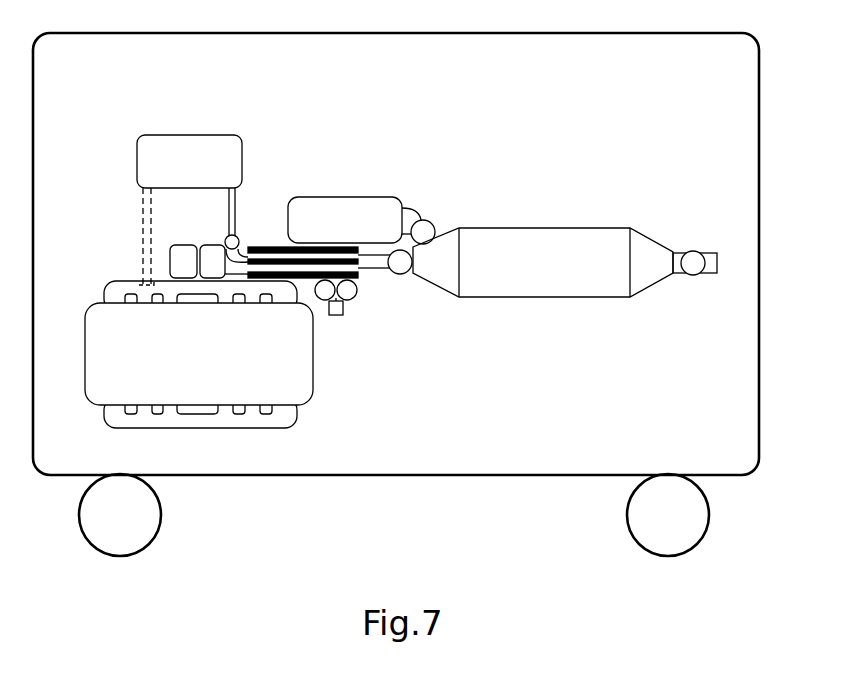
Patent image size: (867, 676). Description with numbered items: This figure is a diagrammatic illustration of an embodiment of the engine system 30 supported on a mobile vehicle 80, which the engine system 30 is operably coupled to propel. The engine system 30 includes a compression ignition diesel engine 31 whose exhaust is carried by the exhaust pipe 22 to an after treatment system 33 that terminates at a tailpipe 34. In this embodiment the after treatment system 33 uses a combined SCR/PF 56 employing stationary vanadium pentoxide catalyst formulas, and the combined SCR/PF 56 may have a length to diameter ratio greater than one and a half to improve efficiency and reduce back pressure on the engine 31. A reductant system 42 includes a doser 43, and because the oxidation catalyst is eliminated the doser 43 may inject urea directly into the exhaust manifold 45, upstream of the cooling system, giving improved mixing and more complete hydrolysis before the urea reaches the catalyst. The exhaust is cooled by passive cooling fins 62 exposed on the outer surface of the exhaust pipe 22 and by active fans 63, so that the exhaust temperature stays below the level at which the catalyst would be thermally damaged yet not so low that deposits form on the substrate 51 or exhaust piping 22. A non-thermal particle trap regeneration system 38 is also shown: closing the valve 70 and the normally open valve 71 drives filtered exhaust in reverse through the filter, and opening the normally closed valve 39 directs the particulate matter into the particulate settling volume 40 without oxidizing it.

The exhaust pipe 22 is at (278, 246).
The engine system 30 is at (435, 154).
The compression ignition diesel engine 31 is at (204, 363).
The after treatment system 33 is at (470, 364).
The tailpipe 34 is at (708, 276).
The non-thermal particle trap regeneration system 38 is at (436, 218).
The valve 39 is at (430, 219).
The particulate settling volume 40 is at (340, 194).
The reductant system 42 is at (190, 128).
The doser 43 is at (237, 236).
The exhaust manifold 45 is at (107, 289).
The substrate 51 is at (532, 281).
The combined SCR/PF 56 is at (543, 267).
The passive cooling fins 62 is at (307, 285).
The fan 63 is at (357, 305).
The valve 70 is at (693, 242).
The normally open valve 71 is at (400, 275).
The mobile vehicle 80 is at (766, 255).